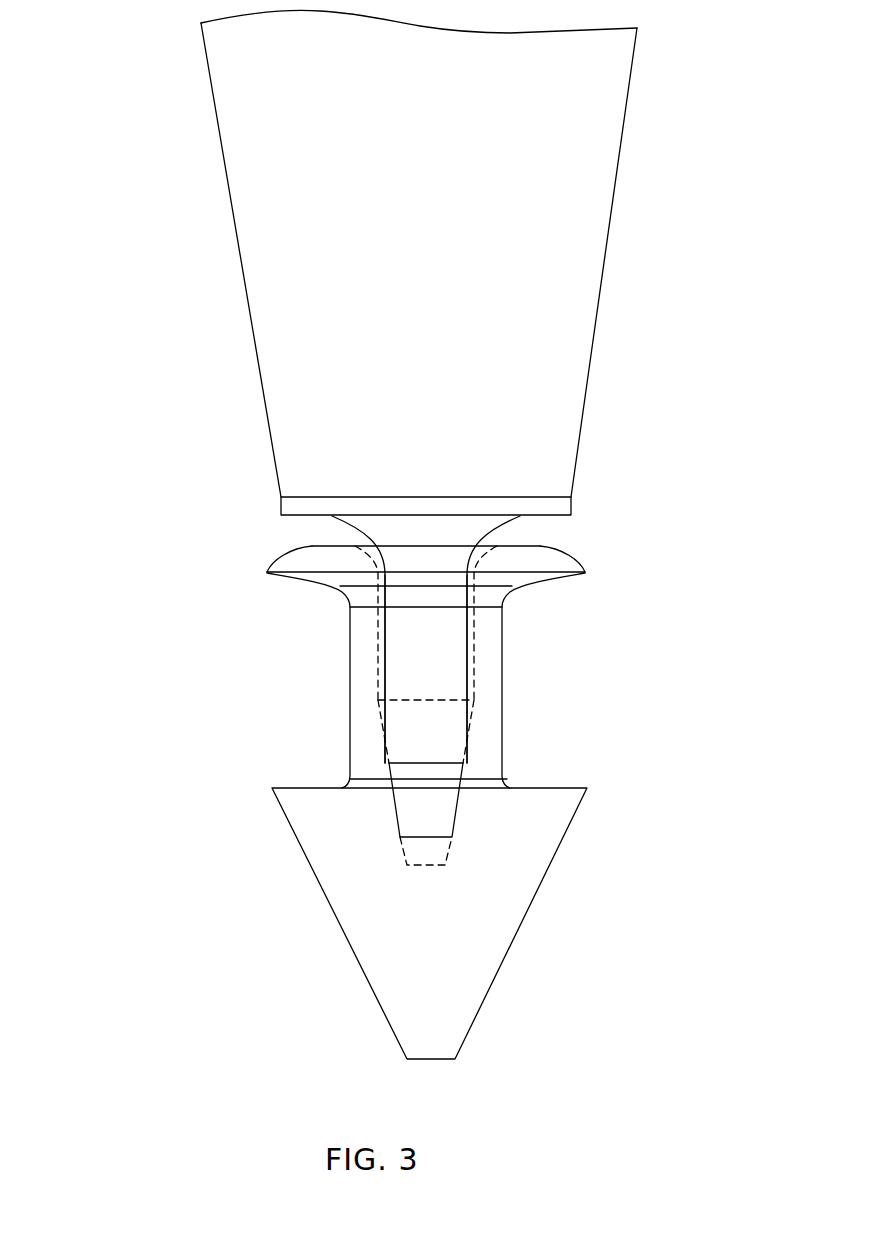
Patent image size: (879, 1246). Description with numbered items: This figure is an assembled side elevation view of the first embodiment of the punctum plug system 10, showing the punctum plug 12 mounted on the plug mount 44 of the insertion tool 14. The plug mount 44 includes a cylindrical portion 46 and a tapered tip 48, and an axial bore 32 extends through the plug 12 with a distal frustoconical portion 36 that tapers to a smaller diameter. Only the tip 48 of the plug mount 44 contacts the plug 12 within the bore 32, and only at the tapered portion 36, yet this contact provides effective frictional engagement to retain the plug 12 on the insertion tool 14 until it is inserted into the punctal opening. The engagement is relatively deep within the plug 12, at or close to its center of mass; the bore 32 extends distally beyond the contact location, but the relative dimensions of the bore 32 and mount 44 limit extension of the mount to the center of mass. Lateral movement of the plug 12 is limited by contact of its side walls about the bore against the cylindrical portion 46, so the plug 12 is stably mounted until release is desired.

The punctum plug system 10 is at (693, 20).
The insertion tool 14 is at (187, 168).
The punctum plug 12 is at (147, 765).
The plug mount 44 is at (387, 645).
The cylindrical portion 46 is at (422, 665).
The axial bore 32 is at (378, 709).
The tapered tip 48 is at (408, 803).
The frustoconical portion 36 is at (418, 847).